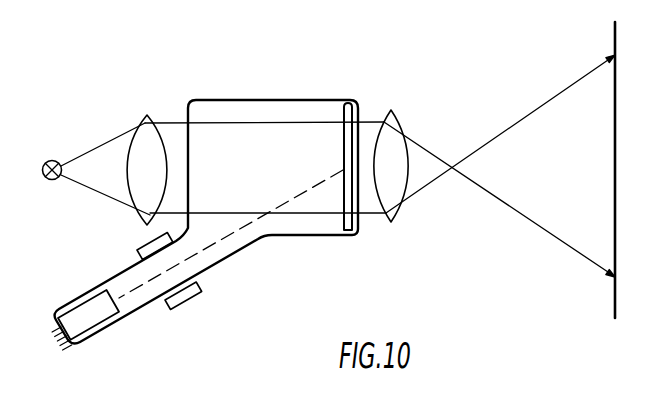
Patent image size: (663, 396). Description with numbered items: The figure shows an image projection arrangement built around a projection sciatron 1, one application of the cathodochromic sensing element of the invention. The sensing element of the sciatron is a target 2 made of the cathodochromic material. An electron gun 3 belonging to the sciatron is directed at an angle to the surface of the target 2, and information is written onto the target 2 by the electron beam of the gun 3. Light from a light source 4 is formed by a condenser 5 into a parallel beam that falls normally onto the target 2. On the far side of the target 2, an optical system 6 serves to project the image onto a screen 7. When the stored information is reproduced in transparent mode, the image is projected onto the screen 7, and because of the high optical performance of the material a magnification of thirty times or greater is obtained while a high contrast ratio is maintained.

The projection sciatron 1 is at (251, 99).
The target 2 is at (349, 101).
The electron gun 3 is at (90, 324).
The light source 4 is at (49, 161).
The condenser 5 is at (148, 112).
The optical system 6 is at (393, 109).
The screen 7 is at (610, 49).